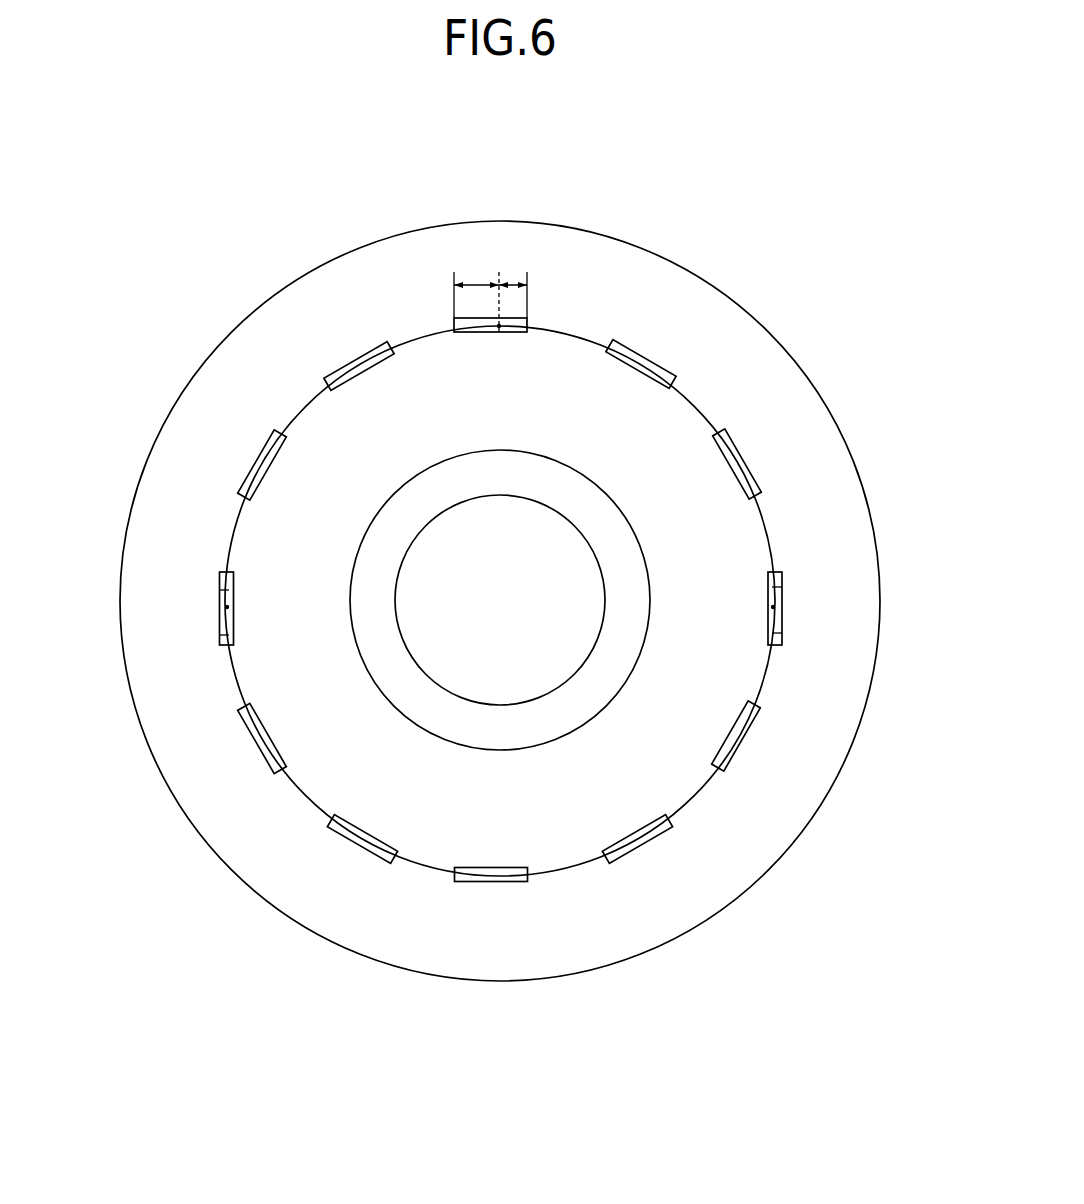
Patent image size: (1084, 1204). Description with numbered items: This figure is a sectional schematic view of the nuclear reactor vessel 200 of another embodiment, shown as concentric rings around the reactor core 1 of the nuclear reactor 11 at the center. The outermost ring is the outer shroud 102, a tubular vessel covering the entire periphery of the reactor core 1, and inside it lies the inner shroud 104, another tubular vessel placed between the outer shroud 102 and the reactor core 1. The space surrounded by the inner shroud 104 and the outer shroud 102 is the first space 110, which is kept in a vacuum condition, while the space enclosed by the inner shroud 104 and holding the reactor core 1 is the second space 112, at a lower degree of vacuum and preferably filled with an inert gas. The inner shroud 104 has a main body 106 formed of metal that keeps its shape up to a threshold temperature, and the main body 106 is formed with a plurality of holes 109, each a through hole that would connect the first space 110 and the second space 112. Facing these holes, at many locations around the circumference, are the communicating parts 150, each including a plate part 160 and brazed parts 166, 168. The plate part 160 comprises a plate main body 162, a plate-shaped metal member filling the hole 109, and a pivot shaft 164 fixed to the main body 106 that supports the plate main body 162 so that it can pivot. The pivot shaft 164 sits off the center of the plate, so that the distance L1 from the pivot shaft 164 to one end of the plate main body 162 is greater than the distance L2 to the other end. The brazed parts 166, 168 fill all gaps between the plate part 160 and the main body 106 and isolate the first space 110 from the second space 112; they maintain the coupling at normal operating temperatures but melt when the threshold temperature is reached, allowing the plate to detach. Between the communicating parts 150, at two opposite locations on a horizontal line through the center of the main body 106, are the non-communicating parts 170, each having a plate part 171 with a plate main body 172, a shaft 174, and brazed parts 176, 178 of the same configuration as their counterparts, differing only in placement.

The reactor core 1 is at (452, 652).
The nuclear reactor 11 is at (602, 712).
The outer shroud 102 is at (338, 255).
The inner shroud 104 is at (598, 335).
The main body 106 is at (290, 422).
The hole 109 is at (350, 394).
The first space 110 is at (273, 327).
The second space 112 is at (278, 535).
The communicating part 150 is at (497, 263).
The plate part 160 is at (455, 319).
The plate main body 162 is at (528, 320).
The pivot shaft 164 is at (505, 333).
The brazed part 166 is at (530, 325).
The brazed part 168 is at (455, 329).
The communicating part 170 is at (228, 635).
The plate part 171 is at (228, 590).
The plate main body 172 is at (777, 578).
The shaft 174 is at (226, 607).
The brazed part 176 is at (228, 645).
The brazed part 178 is at (228, 573).
The nuclear reactor vessel 200 is at (774, 224).
The distance L1 is at (481, 283).
The distance L2 is at (512, 283).